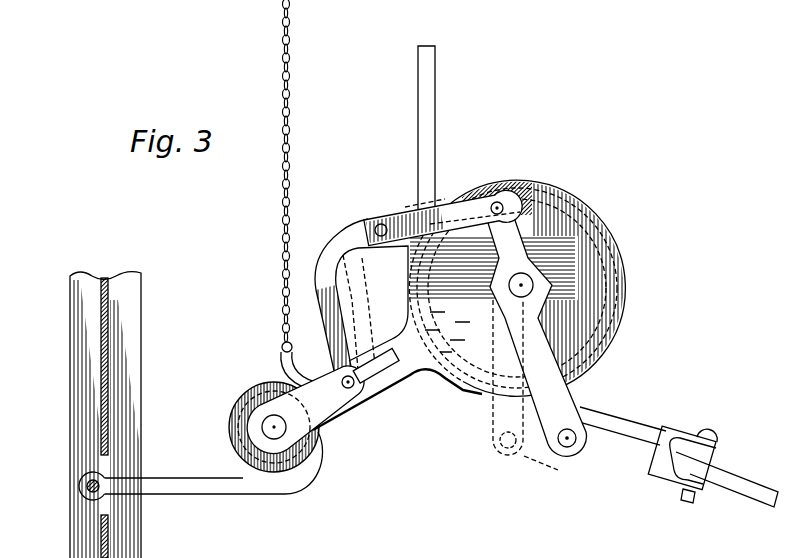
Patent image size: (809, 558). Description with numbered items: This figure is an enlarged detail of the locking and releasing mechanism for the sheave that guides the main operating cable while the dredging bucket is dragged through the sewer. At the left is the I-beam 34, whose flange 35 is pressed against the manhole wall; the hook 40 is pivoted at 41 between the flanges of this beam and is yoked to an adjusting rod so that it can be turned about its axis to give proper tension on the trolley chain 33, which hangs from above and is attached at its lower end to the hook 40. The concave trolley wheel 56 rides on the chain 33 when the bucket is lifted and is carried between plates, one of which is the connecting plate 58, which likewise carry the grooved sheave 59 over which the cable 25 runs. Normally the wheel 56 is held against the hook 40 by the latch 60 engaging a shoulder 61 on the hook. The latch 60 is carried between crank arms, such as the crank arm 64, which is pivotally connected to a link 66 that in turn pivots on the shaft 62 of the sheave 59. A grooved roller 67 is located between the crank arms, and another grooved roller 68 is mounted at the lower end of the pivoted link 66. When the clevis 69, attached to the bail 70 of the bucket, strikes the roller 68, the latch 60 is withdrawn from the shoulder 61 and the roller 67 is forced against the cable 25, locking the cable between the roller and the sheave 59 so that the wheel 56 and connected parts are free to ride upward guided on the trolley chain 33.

The cable 25 is at (433, 90).
The trolley chain 33 is at (290, 100).
The I-beam 34 is at (102, 377).
The flange 35 is at (144, 326).
The hook 40 is at (180, 471).
The pivot 41 is at (85, 486).
The trolley wheel 56 is at (295, 455).
The connecting plate 58 is at (462, 388).
The sheave 59 is at (622, 262).
The latch 60 is at (327, 397).
The shoulder 61 is at (318, 392).
The shaft 62 is at (509, 286).
The crank arm 64 is at (334, 358).
The link 66 is at (568, 386).
The grooved roller 67 is at (410, 204).
The grooved roller 68 is at (567, 458).
The clevis 69 is at (660, 475).
The bail 70 is at (743, 499).